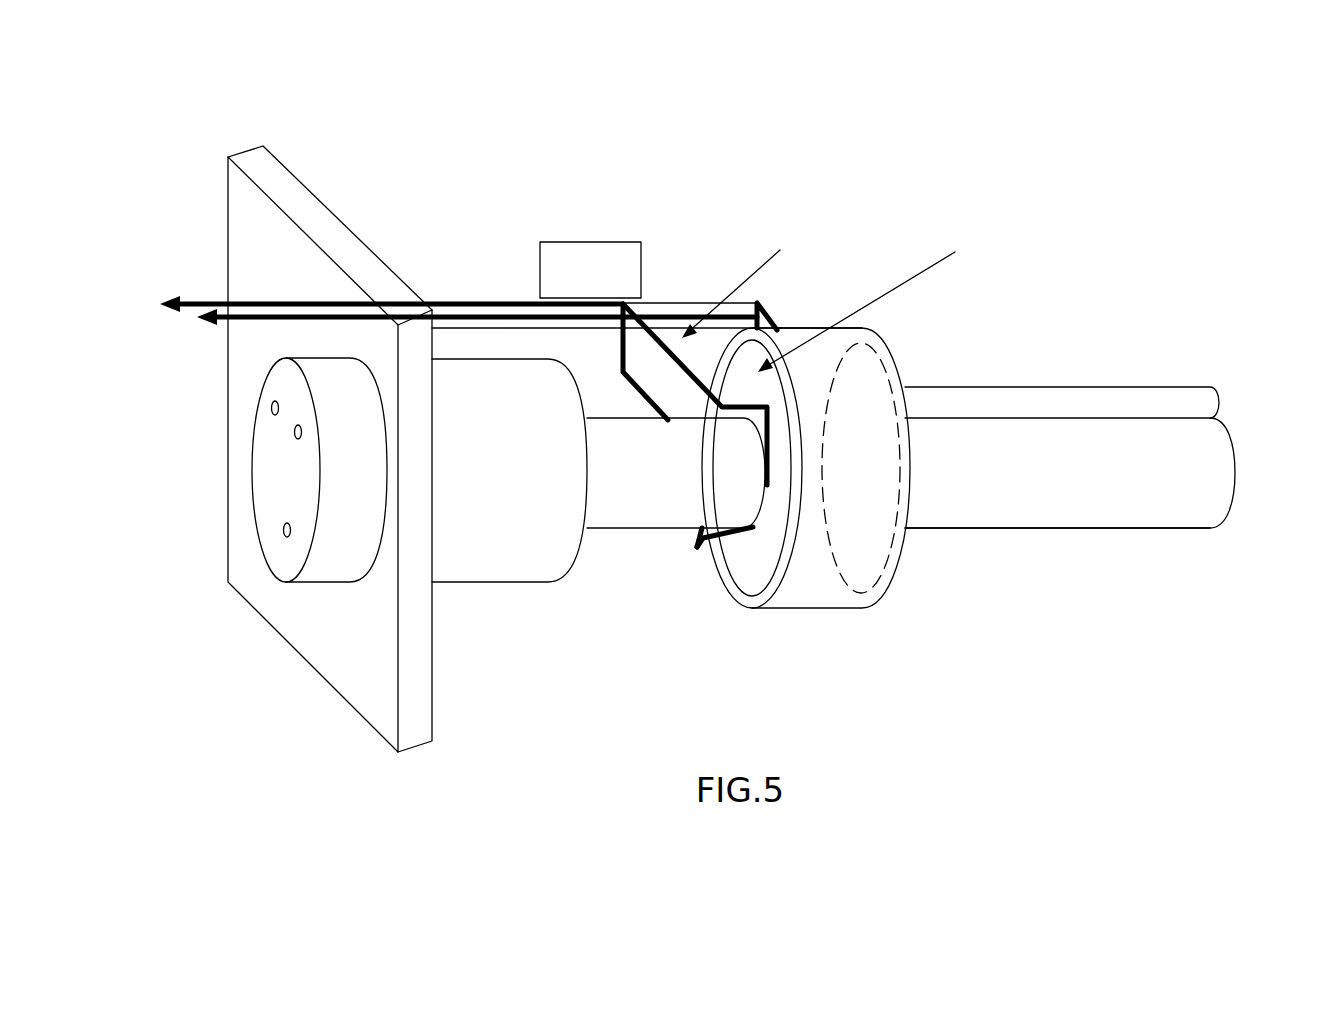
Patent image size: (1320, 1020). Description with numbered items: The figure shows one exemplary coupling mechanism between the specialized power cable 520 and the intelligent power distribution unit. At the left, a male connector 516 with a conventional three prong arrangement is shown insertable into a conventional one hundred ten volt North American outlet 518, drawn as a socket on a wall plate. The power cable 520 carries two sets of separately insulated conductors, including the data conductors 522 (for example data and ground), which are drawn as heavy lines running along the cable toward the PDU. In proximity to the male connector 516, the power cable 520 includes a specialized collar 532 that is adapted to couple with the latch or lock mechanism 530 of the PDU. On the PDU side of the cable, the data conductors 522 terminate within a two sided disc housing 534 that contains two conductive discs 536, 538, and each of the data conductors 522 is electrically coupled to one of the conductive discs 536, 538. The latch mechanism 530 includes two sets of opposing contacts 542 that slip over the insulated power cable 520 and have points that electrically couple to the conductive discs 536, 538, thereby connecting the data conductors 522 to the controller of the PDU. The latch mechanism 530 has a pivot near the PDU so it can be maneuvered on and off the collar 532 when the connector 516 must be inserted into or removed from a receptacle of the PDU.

The male connector 516 is at (480, 583).
The outlet 518 is at (283, 555).
The power cable 520 is at (1068, 508).
The data conductors 522 is at (342, 237).
The latch mechanism 530 is at (665, 313).
The collar 532 is at (637, 528).
The disc housing 534 is at (840, 610).
The conductive disc 536 is at (855, 342).
The conductive disc 538 is at (883, 383).
The opposing contacts 542 is at (668, 355).